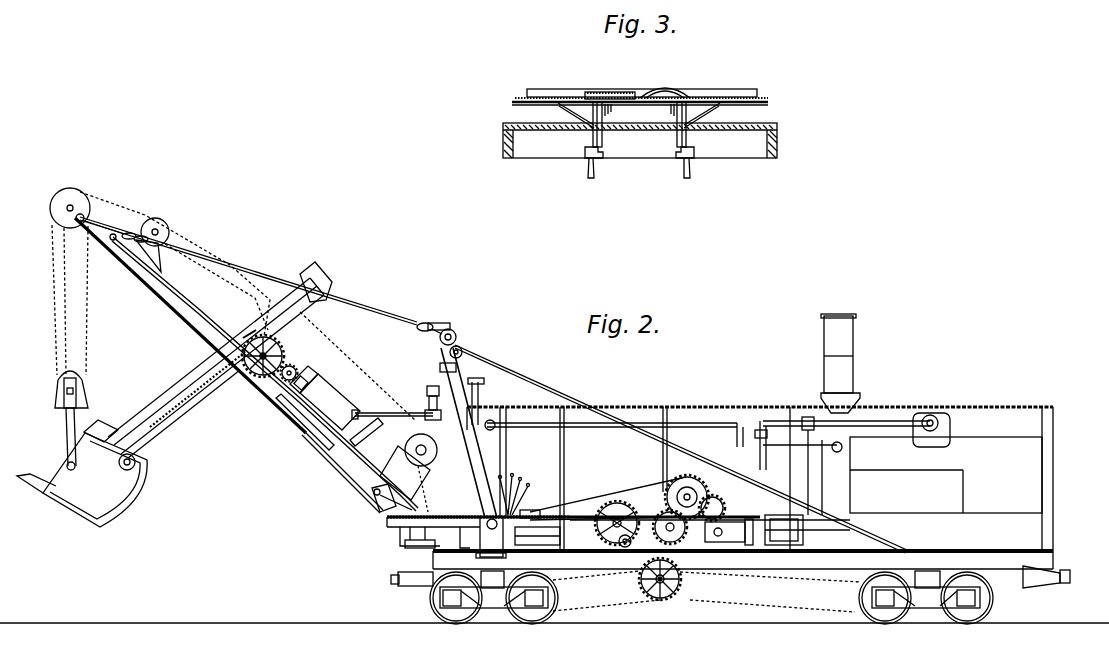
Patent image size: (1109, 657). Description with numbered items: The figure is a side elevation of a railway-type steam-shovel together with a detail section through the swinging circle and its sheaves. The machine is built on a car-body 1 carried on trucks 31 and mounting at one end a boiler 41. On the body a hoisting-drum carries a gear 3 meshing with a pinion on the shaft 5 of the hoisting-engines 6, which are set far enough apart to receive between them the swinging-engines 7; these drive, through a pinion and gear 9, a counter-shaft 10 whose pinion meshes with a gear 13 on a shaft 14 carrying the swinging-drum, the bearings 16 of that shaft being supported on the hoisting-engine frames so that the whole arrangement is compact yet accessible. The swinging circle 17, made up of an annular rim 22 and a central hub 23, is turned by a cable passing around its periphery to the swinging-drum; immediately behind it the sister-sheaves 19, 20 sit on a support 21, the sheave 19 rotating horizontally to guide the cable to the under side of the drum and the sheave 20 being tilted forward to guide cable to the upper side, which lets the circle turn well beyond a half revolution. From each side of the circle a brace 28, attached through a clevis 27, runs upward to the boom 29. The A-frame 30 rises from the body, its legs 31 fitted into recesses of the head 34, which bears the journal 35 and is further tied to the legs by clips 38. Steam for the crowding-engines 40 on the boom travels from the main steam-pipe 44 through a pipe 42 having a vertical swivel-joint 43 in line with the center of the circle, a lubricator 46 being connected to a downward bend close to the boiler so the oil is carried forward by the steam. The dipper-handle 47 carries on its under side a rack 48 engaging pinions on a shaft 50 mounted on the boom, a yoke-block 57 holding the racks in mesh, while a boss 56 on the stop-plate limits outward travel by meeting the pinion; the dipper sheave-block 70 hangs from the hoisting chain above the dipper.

In FIG. 2, the car-body 1 is at (796, 565).
In FIG. 2, the gear 3 is at (633, 515).
In FIG. 2, the shaft 5 is at (647, 541).
In FIG. 2, the hoisting-engines 6 is at (728, 547).
In FIG. 2, the swinging-engines 7 is at (784, 530).
In FIG. 2, the gear 9 is at (718, 502).
In FIG. 2, the counter-shaft 10 is at (733, 517).
In FIG. 2, the gear 13 is at (691, 493).
In FIG. 2, the shaft 14 is at (677, 525).
In FIG. 2, the bearings 16 is at (686, 497).
In FIG. 3, the swinging circle 17 is at (638, 84).
In FIG. 2, the swinging circle 17 is at (388, 521).
In FIG. 3, the sister-sheave 19 is at (598, 90).
In FIG. 2, the sister-sheave 19 is at (603, 506).
In FIG. 3, the sister-sheave 20 is at (681, 88).
In FIG. 2, the sister-sheave 20 is at (530, 511).
In FIG. 3, the support 21 is at (643, 120).
In FIG. 2, the support 21 is at (537, 538).
In FIG. 3, the rim portion 22 is at (757, 91).
In FIG. 2, the hub 23 is at (441, 537).
In FIG. 3, the clevis 27 is at (565, 108).
In FIG. 2, the clevis 27 is at (431, 513).
In FIG. 2, the brace 28 is at (375, 498).
In FIG. 2, the boom 29 is at (342, 466).
In FIG. 2, the A-frame 30 is at (475, 471).
In FIG. 2, the legs 31 is at (555, 598).
In FIG. 2, the head 34 is at (430, 340).
In FIG. 2, the journal 35 is at (450, 328).
In FIG. 2, the clips 38 is at (456, 368).
In FIG. 2, the crowding-engines 40 is at (340, 400).
In FIG. 2, the boiler 41 is at (905, 420).
In FIG. 2, the pipe 42 is at (401, 420).
In FIG. 2, the swivel-joint 43 is at (425, 398).
In FIG. 2, the main steam-pipe 44 is at (870, 420).
In FIG. 2, the lubricator 46 is at (771, 436).
In FIG. 2, the dipper-handle 47 is at (168, 425).
In FIG. 2, the rack 48 is at (226, 384).
In FIG. 2, the shaft 50 is at (194, 414).
In FIG. 2, the boss 56 is at (325, 300).
In FIG. 2, the yoke-block 57 is at (250, 338).
In FIG. 2, the dipper sheave-block 70 is at (86, 398).